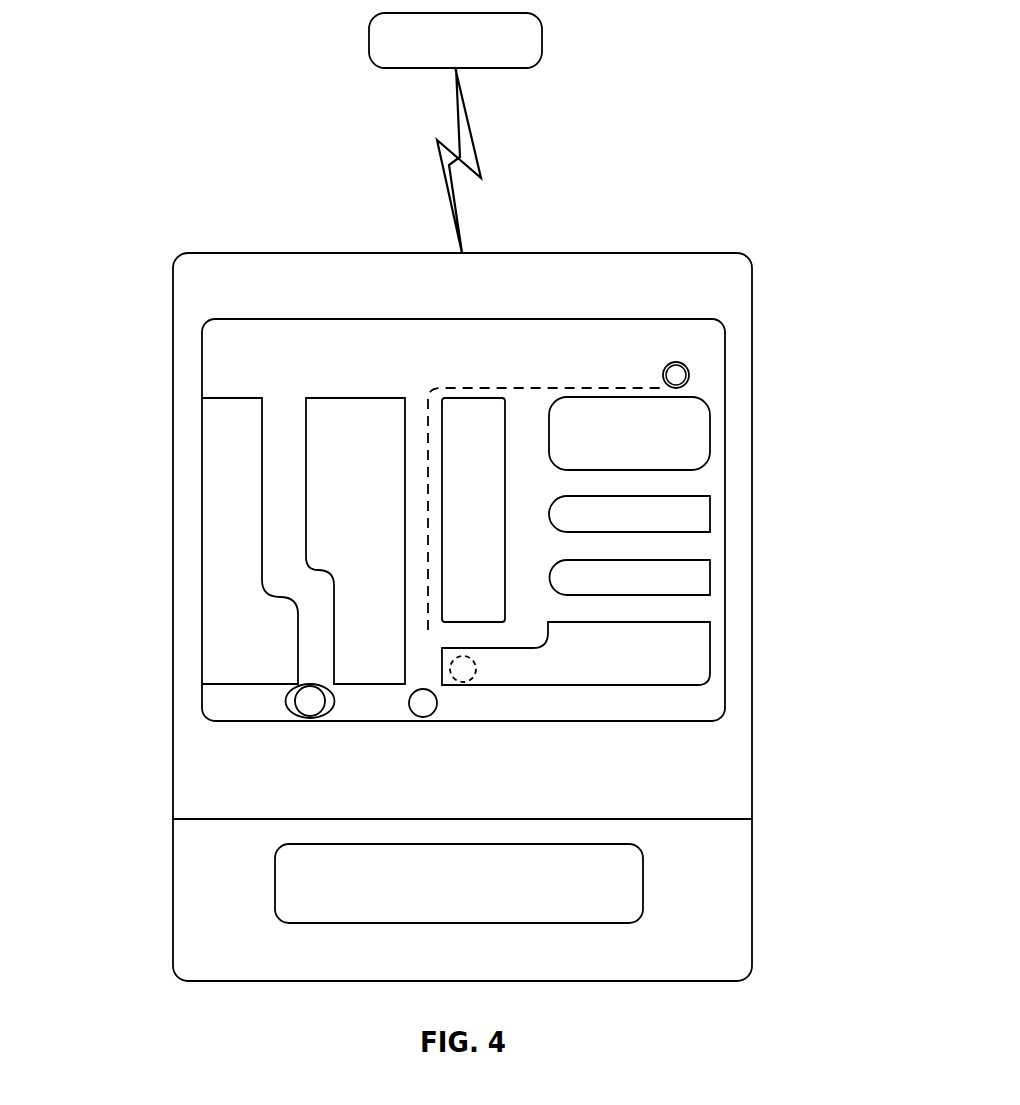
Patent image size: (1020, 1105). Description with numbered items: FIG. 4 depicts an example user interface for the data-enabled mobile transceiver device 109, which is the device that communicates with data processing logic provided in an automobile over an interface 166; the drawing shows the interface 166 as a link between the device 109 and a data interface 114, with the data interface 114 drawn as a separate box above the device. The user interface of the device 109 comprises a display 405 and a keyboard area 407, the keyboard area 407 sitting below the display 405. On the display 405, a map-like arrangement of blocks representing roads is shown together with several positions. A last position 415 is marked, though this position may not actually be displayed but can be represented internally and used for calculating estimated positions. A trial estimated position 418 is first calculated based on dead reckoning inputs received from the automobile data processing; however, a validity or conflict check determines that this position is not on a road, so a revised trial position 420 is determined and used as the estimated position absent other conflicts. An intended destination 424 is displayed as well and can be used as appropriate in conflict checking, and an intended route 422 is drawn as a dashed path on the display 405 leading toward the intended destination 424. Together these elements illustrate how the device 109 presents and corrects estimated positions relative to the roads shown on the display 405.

The data-enabled mobile transceiver device 109 is at (462, 617).
The display 405 is at (463, 520).
The keyboard area 407 is at (459, 883).
The data interface 114 is at (455, 40).
The interface 166 is at (466, 168).
The intended route 422 is at (613, 388).
The intended destination 424 is at (683, 363).
The last position 415 is at (302, 692).
The revised trial position 420 is at (410, 708).
The trial estimated position 418 is at (477, 673).